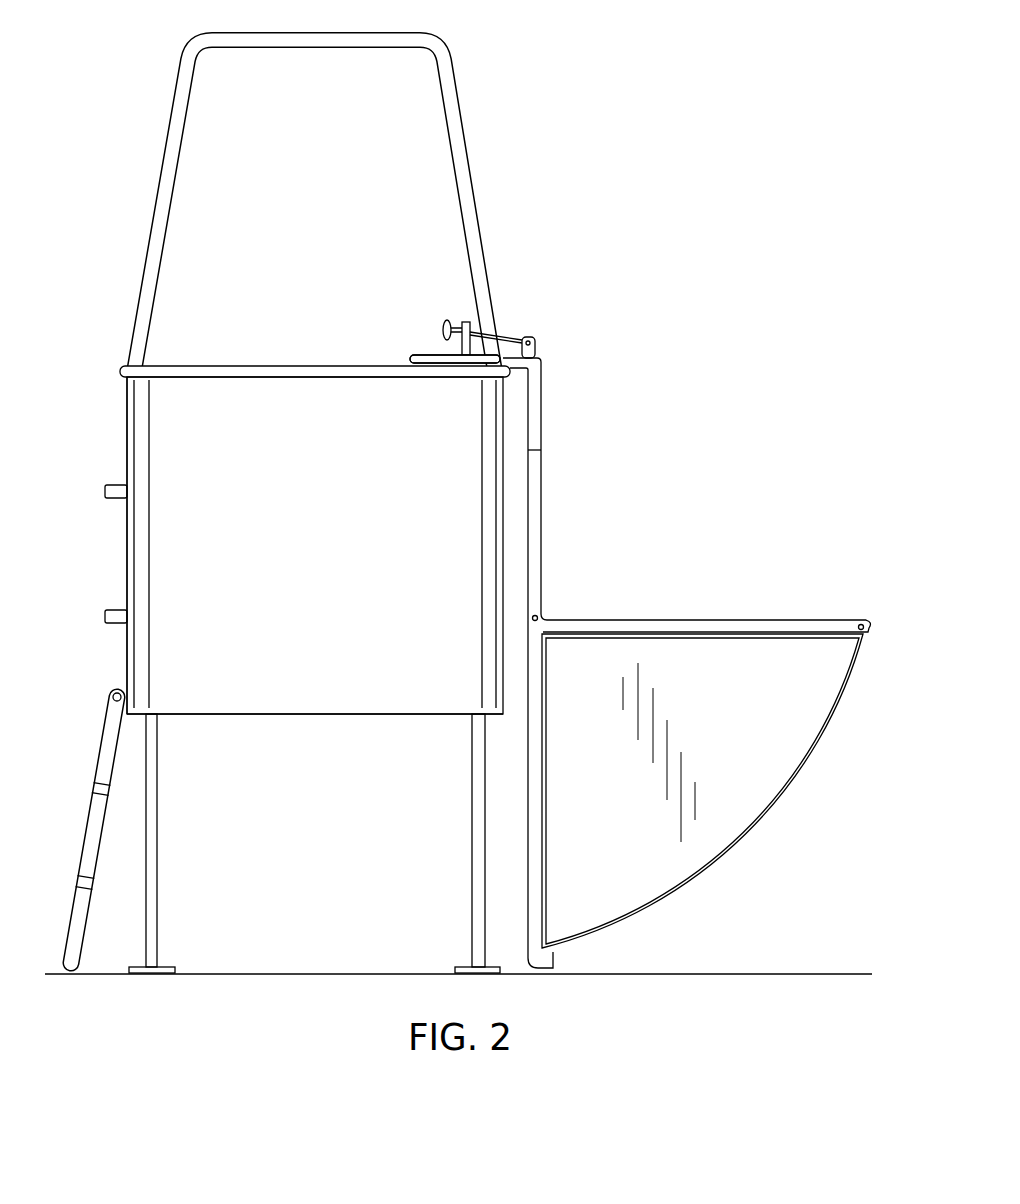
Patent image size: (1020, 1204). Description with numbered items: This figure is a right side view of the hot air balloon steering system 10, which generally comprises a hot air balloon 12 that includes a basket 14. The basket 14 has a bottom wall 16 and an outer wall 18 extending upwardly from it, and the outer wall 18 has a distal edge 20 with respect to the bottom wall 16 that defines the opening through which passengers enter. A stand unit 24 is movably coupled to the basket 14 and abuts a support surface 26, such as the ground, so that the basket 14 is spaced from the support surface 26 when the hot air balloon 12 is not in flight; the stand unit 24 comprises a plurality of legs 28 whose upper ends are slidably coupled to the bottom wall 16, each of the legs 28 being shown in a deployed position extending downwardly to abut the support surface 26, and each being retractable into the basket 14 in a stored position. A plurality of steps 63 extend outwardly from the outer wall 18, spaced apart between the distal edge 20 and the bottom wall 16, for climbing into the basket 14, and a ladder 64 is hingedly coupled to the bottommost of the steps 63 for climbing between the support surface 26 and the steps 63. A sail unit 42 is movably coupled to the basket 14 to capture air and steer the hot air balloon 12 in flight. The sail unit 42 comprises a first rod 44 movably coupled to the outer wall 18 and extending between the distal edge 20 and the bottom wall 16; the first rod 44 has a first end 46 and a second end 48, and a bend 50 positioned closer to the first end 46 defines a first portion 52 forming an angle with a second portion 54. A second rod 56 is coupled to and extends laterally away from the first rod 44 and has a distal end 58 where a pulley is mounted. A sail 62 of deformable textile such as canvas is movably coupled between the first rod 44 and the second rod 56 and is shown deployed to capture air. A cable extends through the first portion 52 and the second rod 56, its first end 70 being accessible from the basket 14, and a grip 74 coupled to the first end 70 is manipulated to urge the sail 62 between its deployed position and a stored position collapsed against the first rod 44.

The hot air balloon steering system 10 is at (612, 118).
The hot air balloon 12 is at (604, 581).
The basket 14 is at (505, 428).
The bottom wall 16 is at (333, 717).
The outer wall 18 is at (143, 536).
The distal edge 20 is at (491, 342).
The stand unit 24 is at (314, 843).
The support surface 26 is at (805, 974).
The legs 28 is at (157, 793).
The sail unit 42 is at (707, 697).
The first rod 44 is at (540, 525).
The first end 46 is at (408, 355).
The second end 48 is at (550, 963).
The bend 50 is at (538, 359).
The first portion 52 is at (562, 449).
The second portion 54 is at (420, 327).
The second rod 56 is at (682, 628).
The distal end 58 is at (868, 622).
The sail 62 is at (795, 780).
The steps 63 is at (105, 488).
The ladder 64 is at (82, 833).
The first end 70 is at (455, 323).
The grip 74 is at (446, 318).